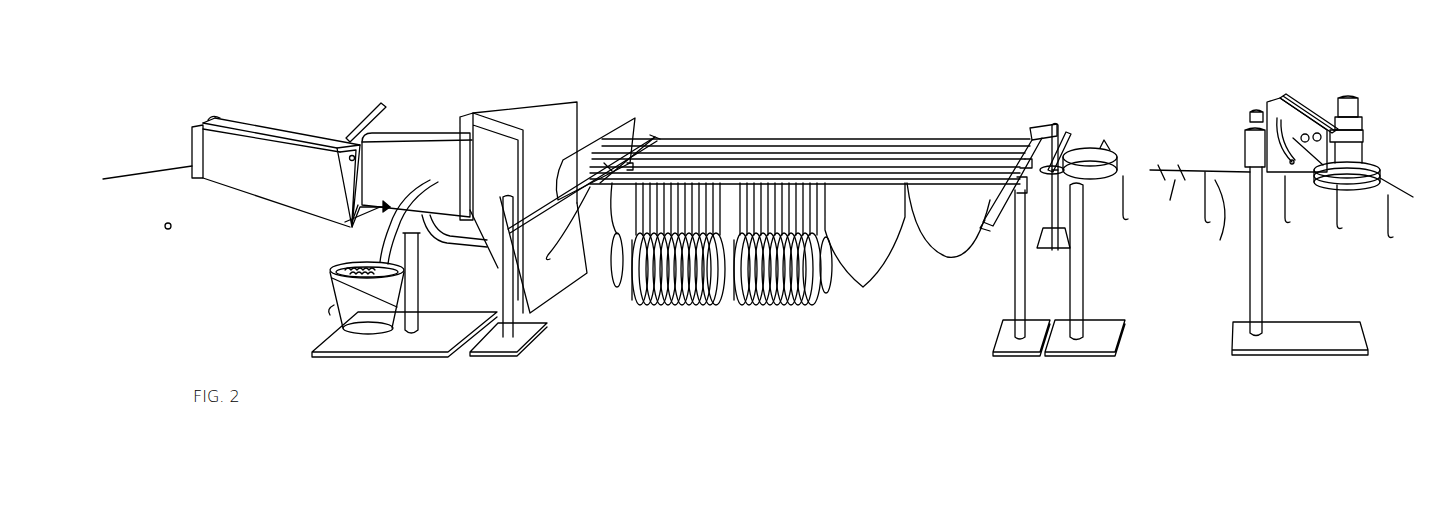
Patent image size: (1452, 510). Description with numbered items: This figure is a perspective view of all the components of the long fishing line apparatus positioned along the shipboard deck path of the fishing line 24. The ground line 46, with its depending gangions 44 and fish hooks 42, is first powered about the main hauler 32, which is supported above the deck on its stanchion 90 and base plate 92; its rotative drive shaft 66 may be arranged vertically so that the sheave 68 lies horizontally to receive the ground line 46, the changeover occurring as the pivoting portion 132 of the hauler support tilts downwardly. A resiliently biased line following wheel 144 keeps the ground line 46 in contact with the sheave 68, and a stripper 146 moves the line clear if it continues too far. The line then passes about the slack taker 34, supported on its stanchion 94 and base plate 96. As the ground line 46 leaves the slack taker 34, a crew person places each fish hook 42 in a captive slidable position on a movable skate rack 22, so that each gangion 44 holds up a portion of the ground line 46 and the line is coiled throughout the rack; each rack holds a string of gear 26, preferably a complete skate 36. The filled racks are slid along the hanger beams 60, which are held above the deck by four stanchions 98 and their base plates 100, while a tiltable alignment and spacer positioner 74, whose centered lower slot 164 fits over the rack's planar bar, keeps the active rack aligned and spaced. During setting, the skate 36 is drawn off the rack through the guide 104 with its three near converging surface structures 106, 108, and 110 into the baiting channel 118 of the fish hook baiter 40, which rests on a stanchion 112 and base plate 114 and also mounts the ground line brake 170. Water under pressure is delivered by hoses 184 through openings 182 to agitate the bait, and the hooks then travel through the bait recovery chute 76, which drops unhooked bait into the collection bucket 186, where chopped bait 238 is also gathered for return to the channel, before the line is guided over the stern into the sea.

The movable skate rack 22 is at (830, 137).
The fishing line 24 is at (685, 305).
The string of gear 26 is at (140, 173).
The main hauler 32 is at (1335, 110).
The slack taker 34 is at (1070, 138).
The skate 36 is at (807, 303).
The fish hook baiter 40 is at (387, 232).
The fish hooks 42 is at (828, 190).
The gangions 44 is at (903, 220).
The ground line 46 is at (872, 285).
The hanger beams 60 is at (655, 133).
The rotative drive shaft 66 is at (1363, 158).
The sheave 68 is at (1107, 143).
The tiltable alignment and spacer positioner 74 is at (635, 118).
The bait recovery chute 76 is at (238, 122).
The stanchion 90 is at (1267, 297).
The base plate 92 is at (1310, 322).
The stanchion 94 is at (1085, 293).
The base plate 96 is at (1117, 327).
The stanchions 98 is at (1055, 125).
The base plates 100 is at (528, 335).
The guide 104 is at (493, 105).
The converging surface structure 106 is at (495, 268).
The converging surface structure 108 is at (577, 102).
The converging surface structure 110 is at (573, 283).
The stanchion 112 is at (407, 345).
The base plate 114 is at (337, 327).
The baiting channel 118 is at (445, 130).
The pivoting portion 132 is at (1280, 98).
The line following wheel 144 is at (1073, 200).
The stripper 146 is at (1290, 173).
The centered lower slot 164 is at (608, 167).
The ground line brake 170 is at (372, 105).
The openings 182 is at (430, 180).
The hoses 184 is at (463, 250).
The collection bucket 186 is at (332, 272).
The chopped bait 238 is at (171, 225).